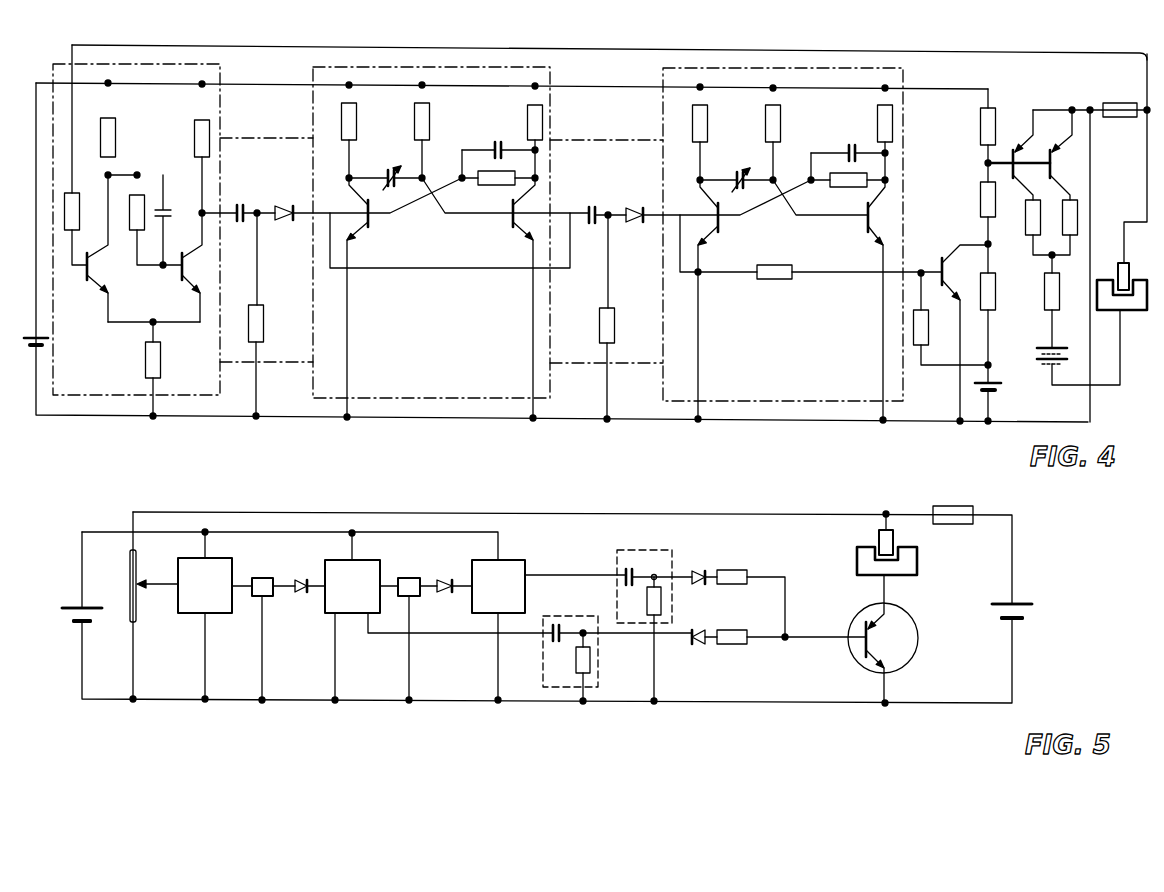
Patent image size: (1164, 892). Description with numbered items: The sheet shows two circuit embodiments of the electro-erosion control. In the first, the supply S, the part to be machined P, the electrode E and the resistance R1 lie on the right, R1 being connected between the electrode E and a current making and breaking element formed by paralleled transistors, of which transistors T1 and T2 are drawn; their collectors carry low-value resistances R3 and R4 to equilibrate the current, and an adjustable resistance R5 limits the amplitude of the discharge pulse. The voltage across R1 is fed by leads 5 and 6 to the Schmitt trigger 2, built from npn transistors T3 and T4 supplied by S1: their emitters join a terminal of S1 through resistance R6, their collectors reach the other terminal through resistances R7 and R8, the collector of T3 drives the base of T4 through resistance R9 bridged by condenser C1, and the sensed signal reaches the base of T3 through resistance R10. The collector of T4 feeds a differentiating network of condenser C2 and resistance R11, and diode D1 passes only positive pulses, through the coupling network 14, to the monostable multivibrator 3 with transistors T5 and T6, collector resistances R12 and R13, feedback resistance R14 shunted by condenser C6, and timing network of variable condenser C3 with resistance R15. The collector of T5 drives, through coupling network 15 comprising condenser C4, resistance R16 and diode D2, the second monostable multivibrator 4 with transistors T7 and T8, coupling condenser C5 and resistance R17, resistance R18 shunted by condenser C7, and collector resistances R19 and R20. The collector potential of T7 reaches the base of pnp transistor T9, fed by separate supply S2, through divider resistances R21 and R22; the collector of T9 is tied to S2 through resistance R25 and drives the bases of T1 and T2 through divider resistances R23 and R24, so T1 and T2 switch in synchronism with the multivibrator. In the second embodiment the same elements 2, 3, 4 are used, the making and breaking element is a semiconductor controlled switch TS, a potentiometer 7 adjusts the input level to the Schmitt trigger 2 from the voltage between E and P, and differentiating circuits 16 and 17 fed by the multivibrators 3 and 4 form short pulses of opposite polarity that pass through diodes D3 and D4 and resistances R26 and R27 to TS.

In FIG. 4, the Schmitt trigger 2 is at (220, 72).
In FIG. 5, the Schmitt trigger 2 is at (190, 613).
In FIG. 4, the monostable multivibrator 3 is at (551, 75).
In FIG. 5, the monostable multivibrator 3 is at (328, 613).
In FIG. 4, the second monostable multivibrator 4 is at (904, 76).
In FIG. 5, the second monostable multivibrator 4 is at (518, 560).
In FIG. 4, the lead 5 is at (1112, 52).
In FIG. 4, the lead 6 is at (1091, 192).
In FIG. 5, the potentiometer 7 is at (128, 600).
In FIG. 4, the coupling network 14 is at (266, 238).
In FIG. 5, the coupling network 14 is at (262, 578).
In FIG. 4, the coupling network 15 is at (606, 239).
In FIG. 5, the coupling network 15 is at (409, 578).
In FIG. 5, the differentiating circuit 16 is at (620, 558).
In FIG. 5, the differentiating circuit 17 is at (598, 682).
In FIG. 4, the resistance R1 is at (1128, 102).
In FIG. 4, the resistance R3 is at (1025, 225).
In FIG. 4, the resistance R4 is at (1077, 230).
In FIG. 4, the resistance R5 is at (1059, 300).
In FIG. 4, the resistance R6 is at (161, 365).
In FIG. 4, the resistance R7 is at (116, 138).
In FIG. 4, the resistance R8 is at (194, 148).
In FIG. 4, the resistance R9 is at (129, 217).
In FIG. 4, the resistance R10 is at (80, 203).
In FIG. 4, the resistance R11 is at (264, 323).
In FIG. 4, the resistance R12 is at (357, 125).
In FIG. 4, the resistance R13 is at (527, 120).
In FIG. 4, the resistance R14 is at (494, 185).
In FIG. 4, the resistance R15 is at (430, 128).
In FIG. 4, the resistance R16 is at (599, 318).
In FIG. 4, the resistance R17 is at (781, 128).
In FIG. 4, the resistance R18 is at (846, 187).
In FIG. 4, the resistance R19 is at (708, 128).
In FIG. 4, the resistance R20 is at (877, 130).
In FIG. 4, the resistance R21 is at (772, 279).
In FIG. 4, the resistance R22 is at (916, 346).
In FIG. 4, the resistance R23 is at (980, 196).
In FIG. 4, the resistance R24 is at (980, 136).
In FIG. 4, the resistance R25 is at (996, 296).
In FIG. 5, the resistance R26 is at (732, 570).
In FIG. 5, the resistance R27 is at (732, 630).
In FIG. 4, the condenser C1 is at (171, 212).
In FIG. 4, the condenser C2 is at (234, 202).
In FIG. 4, the variable condenser C3 is at (388, 170).
In FIG. 4, the condenser C4 is at (590, 203).
In FIG. 4, the condenser C5 is at (737, 172).
In FIG. 4, the condenser C6 is at (494, 143).
In FIG. 4, the condenser C7 is at (848, 146).
In FIG. 4, the diode D1 is at (288, 205).
In FIG. 4, the diode D2 is at (638, 207).
In FIG. 5, the diode D3 is at (698, 570).
In FIG. 5, the diode D4 is at (698, 645).
In FIG. 4, the transistor T1 is at (1010, 150).
In FIG. 4, the transistor T2 is at (1058, 165).
In FIG. 4, the transistor T3 is at (76, 278).
In FIG. 4, the transistor T4 is at (172, 278).
In FIG. 4, the transistor T5 is at (372, 235).
In FIG. 4, the transistor T6 is at (508, 235).
In FIG. 4, the transistor T7 is at (722, 238).
In FIG. 4, the transistor T8 is at (863, 238).
In FIG. 4, the transistor T9 is at (934, 262).
In FIG. 5, the semiconductor controlled switch TS is at (910, 640).
In FIG. 4, the supply S is at (1064, 356).
In FIG. 5, the supply S is at (1030, 612).
In FIG. 4, the supply of current S1 is at (42, 344).
In FIG. 5, the supply of current S1 is at (72, 614).
In FIG. 4, the supply S2 is at (1000, 386).
In FIG. 4, the electrode E is at (1112, 262).
In FIG. 5, the electrode E is at (877, 533).
In FIG. 4, the part to be machined P is at (1102, 311).
In FIG. 5, the part to be machined P is at (856, 572).